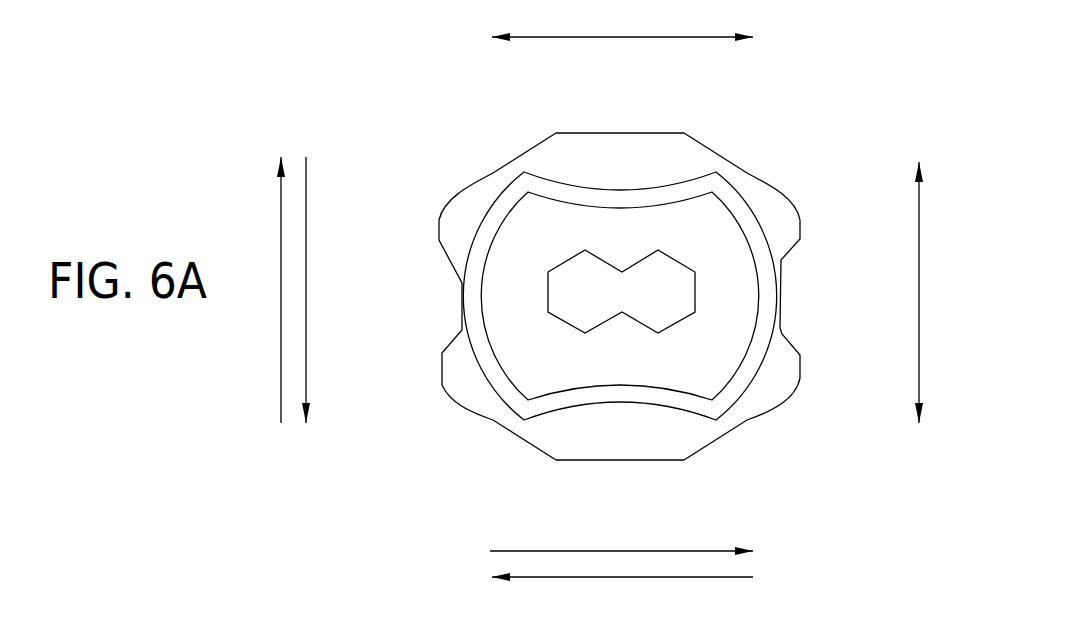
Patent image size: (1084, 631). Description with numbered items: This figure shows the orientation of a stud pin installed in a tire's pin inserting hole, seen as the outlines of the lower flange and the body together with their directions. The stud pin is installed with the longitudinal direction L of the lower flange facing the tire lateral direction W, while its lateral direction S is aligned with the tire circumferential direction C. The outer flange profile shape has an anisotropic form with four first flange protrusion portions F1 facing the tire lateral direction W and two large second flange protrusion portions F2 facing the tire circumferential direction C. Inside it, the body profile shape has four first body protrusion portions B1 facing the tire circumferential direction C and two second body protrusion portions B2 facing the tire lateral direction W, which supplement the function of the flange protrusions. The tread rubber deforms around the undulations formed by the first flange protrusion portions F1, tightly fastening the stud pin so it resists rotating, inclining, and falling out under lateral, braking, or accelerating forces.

The first body protrusion portion B1 is at (523, 172).
The second body protrusion portion B2 is at (463, 333).
The first flange protrusion portion F1 is at (438, 233).
The second flange protrusion portion F2 is at (654, 133).
The tire lateral direction W is at (622, 20).
The lateral direction S is at (301, 290).
The tire circumferential direction C is at (934, 292).
The longitudinal direction L is at (621, 580).